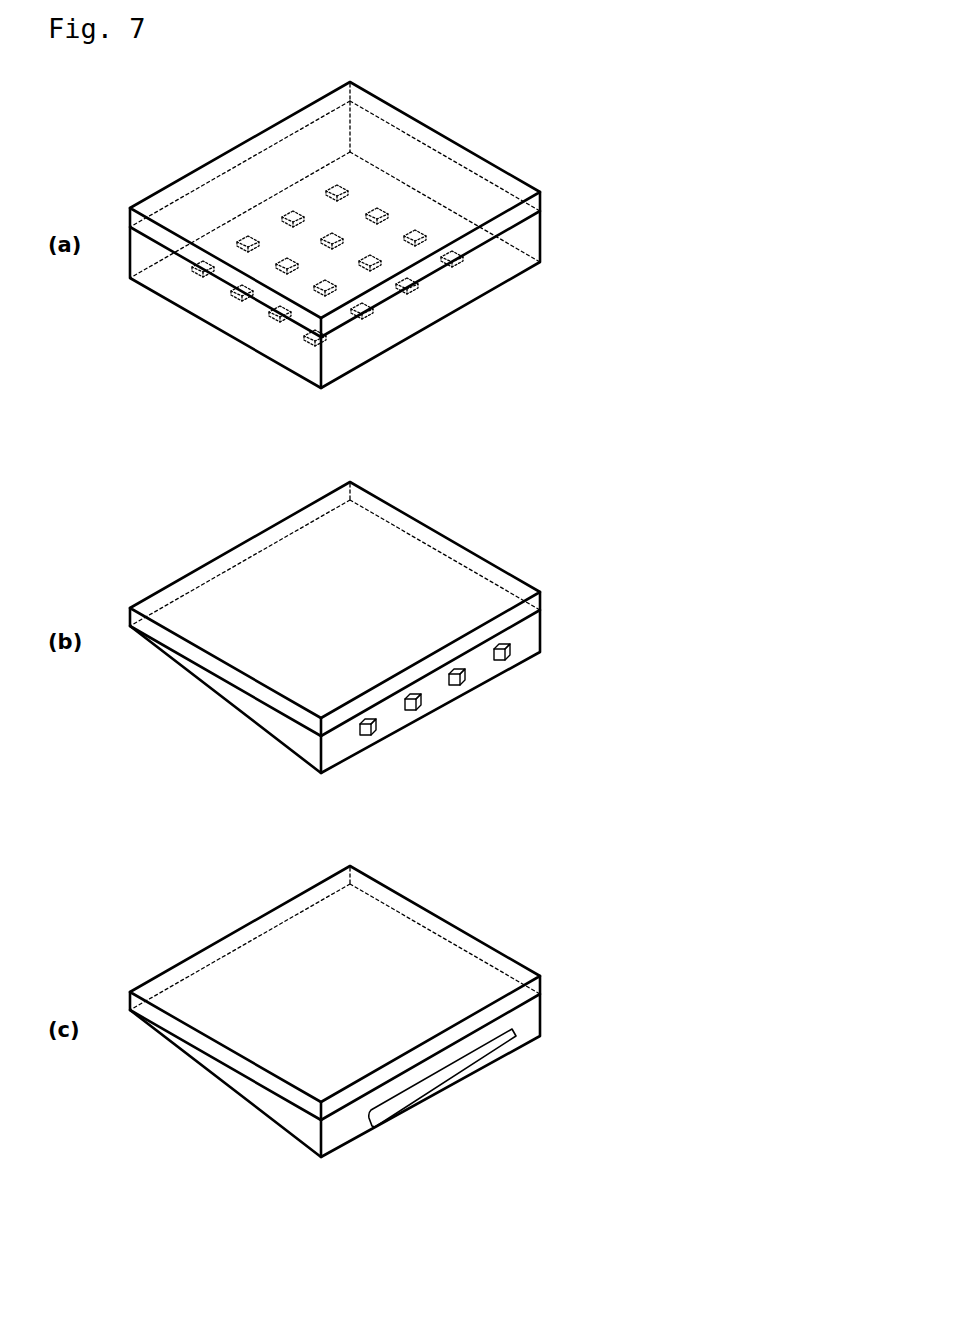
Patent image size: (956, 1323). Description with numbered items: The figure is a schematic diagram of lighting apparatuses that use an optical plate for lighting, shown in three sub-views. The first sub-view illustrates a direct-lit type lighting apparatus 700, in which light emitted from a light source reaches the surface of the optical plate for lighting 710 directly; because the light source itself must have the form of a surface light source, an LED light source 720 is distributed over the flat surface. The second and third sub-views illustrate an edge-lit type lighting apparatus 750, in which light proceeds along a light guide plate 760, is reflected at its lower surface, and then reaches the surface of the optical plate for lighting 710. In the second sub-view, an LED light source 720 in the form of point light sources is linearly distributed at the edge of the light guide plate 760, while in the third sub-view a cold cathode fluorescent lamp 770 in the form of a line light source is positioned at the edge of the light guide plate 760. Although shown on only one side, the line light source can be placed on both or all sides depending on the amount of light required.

The direct-lit type lighting apparatus 700 is at (497, 138).
The optical plate for lighting 710 is at (540, 193).
The LED light source 720 is at (377, 313).
The edge-lit type lighting apparatus 750 is at (379, 817).
The light guide plate 760 is at (280, 728).
The cold cathode fluorescent lamp (CCFL) 770 is at (453, 1067).